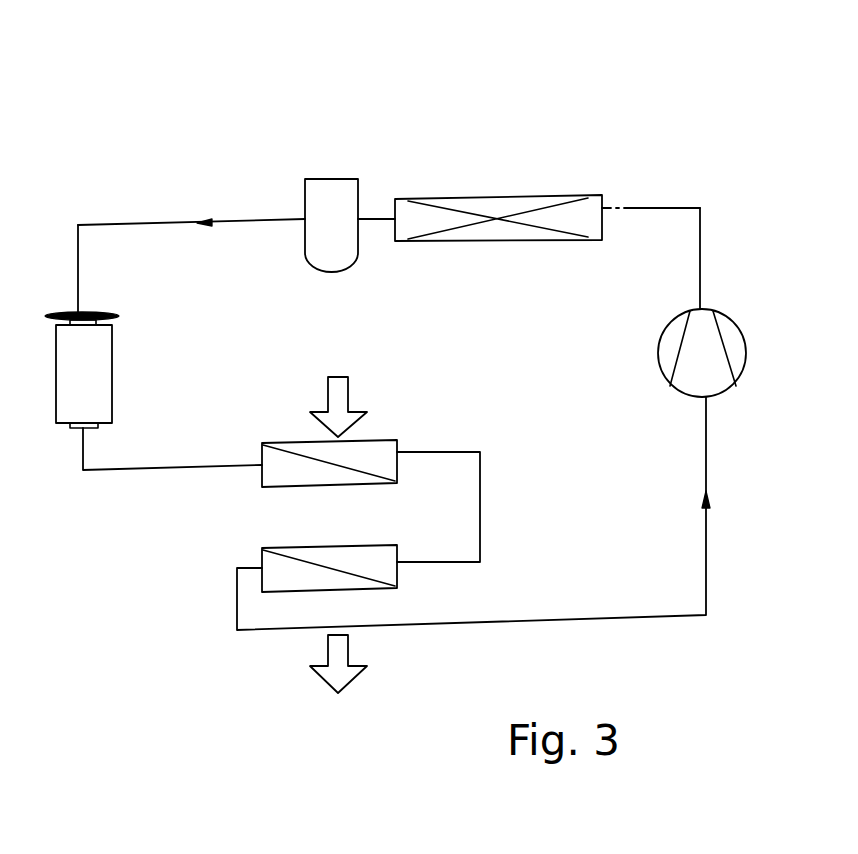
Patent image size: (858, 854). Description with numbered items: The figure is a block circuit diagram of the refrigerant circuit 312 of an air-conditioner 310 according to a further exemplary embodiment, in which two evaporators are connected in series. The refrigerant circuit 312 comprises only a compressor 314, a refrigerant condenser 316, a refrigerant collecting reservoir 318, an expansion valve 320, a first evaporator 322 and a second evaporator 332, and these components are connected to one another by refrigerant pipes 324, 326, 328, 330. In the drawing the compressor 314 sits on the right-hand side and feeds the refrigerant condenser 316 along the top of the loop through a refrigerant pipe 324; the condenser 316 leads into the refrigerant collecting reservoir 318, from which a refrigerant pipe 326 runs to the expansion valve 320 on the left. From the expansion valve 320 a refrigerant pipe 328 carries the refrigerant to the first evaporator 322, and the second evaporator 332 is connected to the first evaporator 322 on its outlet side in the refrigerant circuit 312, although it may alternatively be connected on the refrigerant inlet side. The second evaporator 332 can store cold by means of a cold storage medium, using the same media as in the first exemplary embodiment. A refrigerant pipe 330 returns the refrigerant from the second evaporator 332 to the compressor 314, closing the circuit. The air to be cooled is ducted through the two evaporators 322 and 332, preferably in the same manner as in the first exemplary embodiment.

The air-conditioner 310 is at (78, 205).
The refrigerant circuit 312 is at (186, 222).
The compressor 314 is at (718, 360).
The refrigerant condenser 316 is at (503, 202).
The refrigerant collecting reservoir 318 is at (328, 197).
The expansion valve 320 is at (100, 372).
The first evaporator 322 is at (270, 462).
The refrigerant pipe 324 is at (700, 261).
The refrigerant pipe 326 is at (127, 227).
The refrigerant pipe 328 is at (91, 470).
The refrigerant pipe 330 is at (707, 588).
The second evaporator 332 is at (266, 562).